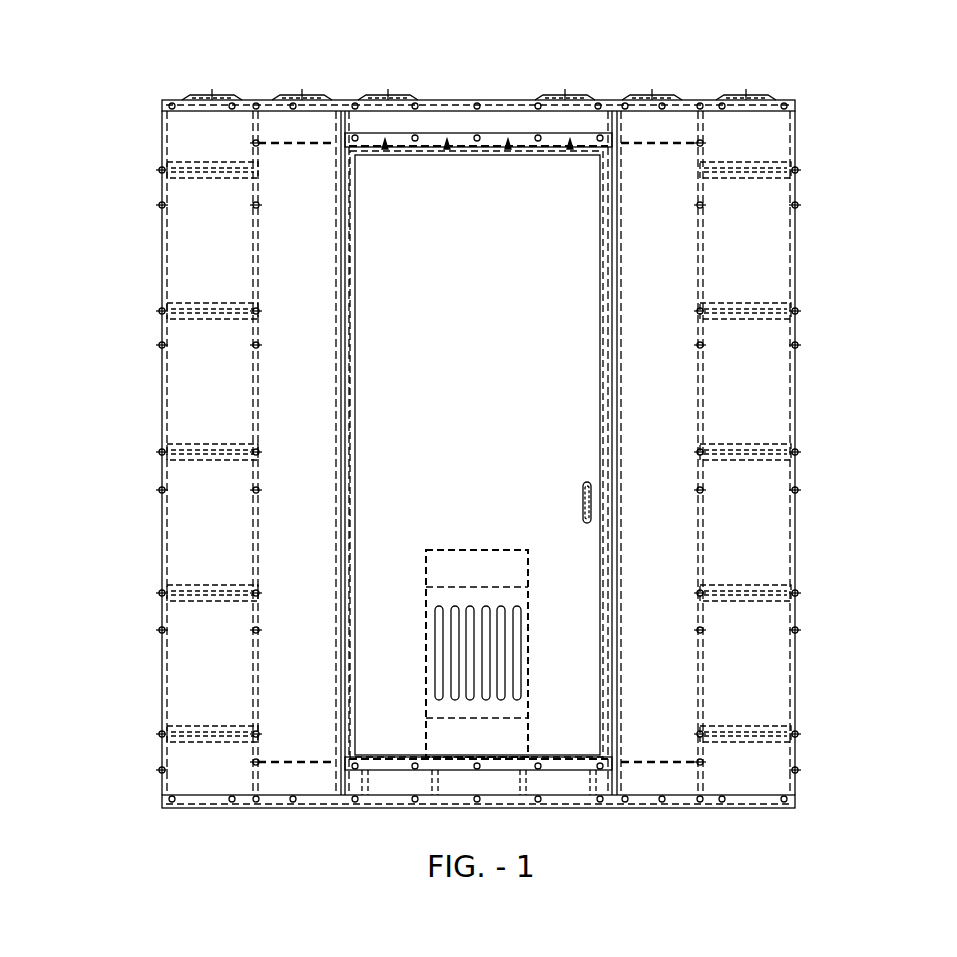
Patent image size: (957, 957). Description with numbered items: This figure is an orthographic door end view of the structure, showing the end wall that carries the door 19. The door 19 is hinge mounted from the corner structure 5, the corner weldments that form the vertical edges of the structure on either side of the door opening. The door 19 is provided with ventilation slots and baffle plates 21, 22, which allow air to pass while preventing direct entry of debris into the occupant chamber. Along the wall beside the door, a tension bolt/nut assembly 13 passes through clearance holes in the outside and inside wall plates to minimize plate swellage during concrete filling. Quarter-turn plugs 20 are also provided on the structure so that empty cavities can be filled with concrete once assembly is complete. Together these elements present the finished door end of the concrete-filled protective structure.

The ¼ turn plug 20 is at (780, 91).
The corner structure 5 is at (203, 248).
The door 19 is at (563, 289).
The tension bolt/nut assembly 13 is at (808, 450).
The ventilation slots and baffle plates 21 is at (476, 722).
The ventilation slots and baffle plates 22 is at (425, 697).